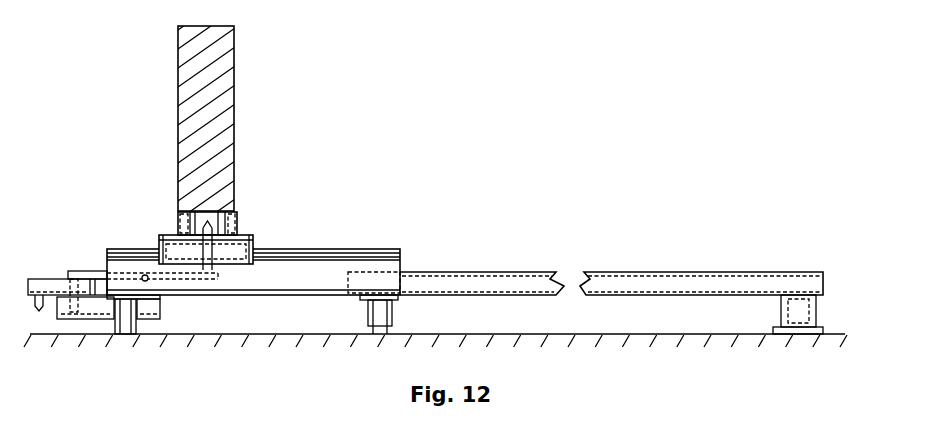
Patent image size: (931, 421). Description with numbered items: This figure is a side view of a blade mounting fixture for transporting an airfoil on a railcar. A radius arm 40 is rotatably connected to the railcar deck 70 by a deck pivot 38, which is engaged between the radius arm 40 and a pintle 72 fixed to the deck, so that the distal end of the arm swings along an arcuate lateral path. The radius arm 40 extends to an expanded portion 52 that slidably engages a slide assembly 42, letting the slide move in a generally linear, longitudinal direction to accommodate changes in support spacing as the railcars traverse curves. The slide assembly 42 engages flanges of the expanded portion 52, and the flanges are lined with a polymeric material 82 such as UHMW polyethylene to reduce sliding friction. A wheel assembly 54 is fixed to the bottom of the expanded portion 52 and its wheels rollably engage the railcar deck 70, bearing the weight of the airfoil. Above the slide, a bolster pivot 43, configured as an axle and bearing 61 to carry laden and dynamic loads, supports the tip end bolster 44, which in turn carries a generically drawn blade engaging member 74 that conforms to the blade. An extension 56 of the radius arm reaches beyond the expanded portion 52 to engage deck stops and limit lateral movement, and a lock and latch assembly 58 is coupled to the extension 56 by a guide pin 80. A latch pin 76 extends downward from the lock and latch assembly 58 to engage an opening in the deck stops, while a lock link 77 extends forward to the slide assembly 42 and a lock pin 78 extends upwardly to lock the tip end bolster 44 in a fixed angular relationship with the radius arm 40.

The deck pivot 38 is at (781, 320).
The radius arm 40 is at (626, 272).
The slide assembly 42 is at (253, 240).
The bolster pivot 43 is at (178, 229).
The tip end bolster 44 is at (238, 215).
The expanded portion 52 is at (400, 268).
The wheel assembly 54 is at (136, 326).
The extension 56 is at (97, 318).
The lock and latch assembly 58 is at (45, 279).
The axle and bearing 61 is at (180, 216).
The railcar deck 70 is at (560, 334).
The pintle 72 is at (816, 316).
The blade engaging member 74 is at (234, 90).
The latch pin 76 is at (37, 309).
The lock link 77 is at (95, 271).
The lock pin 78 is at (213, 258).
The guide pin 80 is at (75, 314).
The polymeric material 82 is at (352, 249).